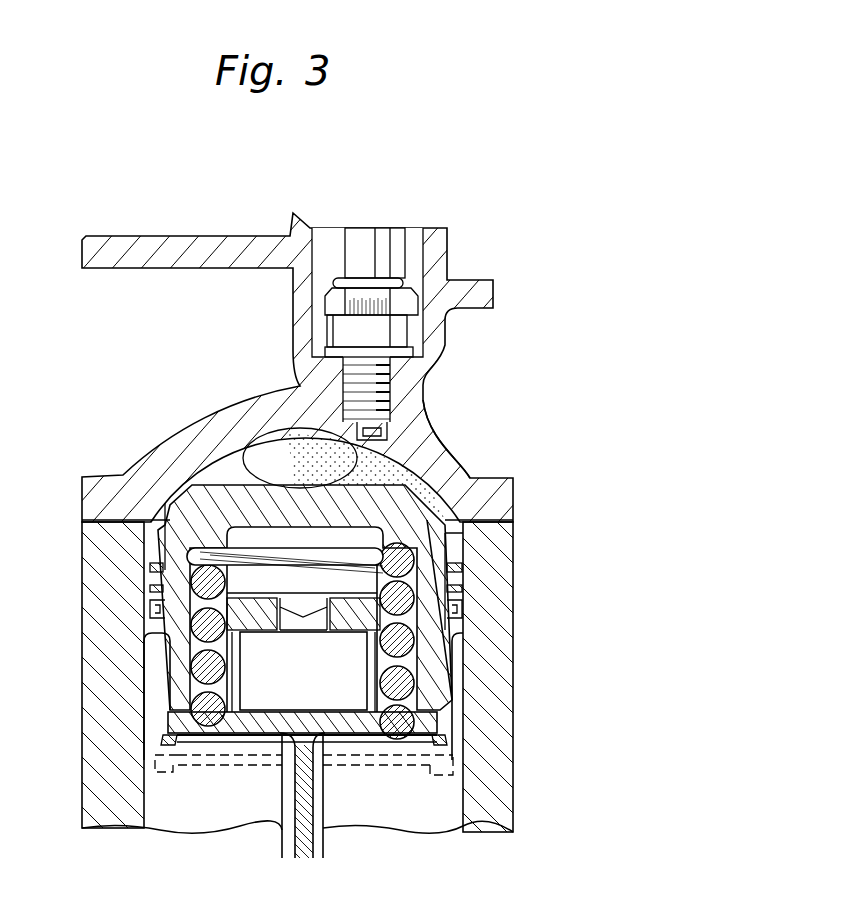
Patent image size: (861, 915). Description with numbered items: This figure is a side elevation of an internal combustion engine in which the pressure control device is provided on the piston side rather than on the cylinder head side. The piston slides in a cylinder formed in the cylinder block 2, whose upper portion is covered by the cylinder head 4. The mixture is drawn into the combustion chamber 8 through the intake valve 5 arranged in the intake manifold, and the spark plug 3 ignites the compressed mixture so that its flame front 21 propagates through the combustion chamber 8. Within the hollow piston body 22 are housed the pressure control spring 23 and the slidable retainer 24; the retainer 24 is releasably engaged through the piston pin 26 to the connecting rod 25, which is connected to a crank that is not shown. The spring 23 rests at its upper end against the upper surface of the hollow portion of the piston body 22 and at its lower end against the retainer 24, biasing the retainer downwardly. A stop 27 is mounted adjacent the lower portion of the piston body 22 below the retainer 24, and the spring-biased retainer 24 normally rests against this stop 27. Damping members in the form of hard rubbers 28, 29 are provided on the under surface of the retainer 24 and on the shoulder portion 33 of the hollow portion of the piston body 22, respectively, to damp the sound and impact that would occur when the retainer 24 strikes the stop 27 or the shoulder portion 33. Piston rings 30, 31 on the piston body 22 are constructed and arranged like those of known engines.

The cylinder block 2 is at (482, 545).
The spark plug 3 is at (397, 332).
The cylinder head 4 is at (450, 473).
The intake valve 5 is at (395, 452).
The combustion chamber 8 is at (207, 468).
The flame front 21 is at (245, 457).
The piston body 22 is at (440, 628).
The pressure control spring 23 is at (415, 692).
The slidable retainer 24 is at (427, 723).
The connecting rod 25 is at (303, 846).
The piston pin 26 is at (262, 698).
The stop 27 is at (187, 743).
The hard rubber damping member 28 is at (160, 745).
The hard rubber damping member 29 is at (168, 650).
The piston ring 30 is at (150, 565).
The piston ring 31 is at (150, 590).
The shoulder portion 33 is at (148, 614).